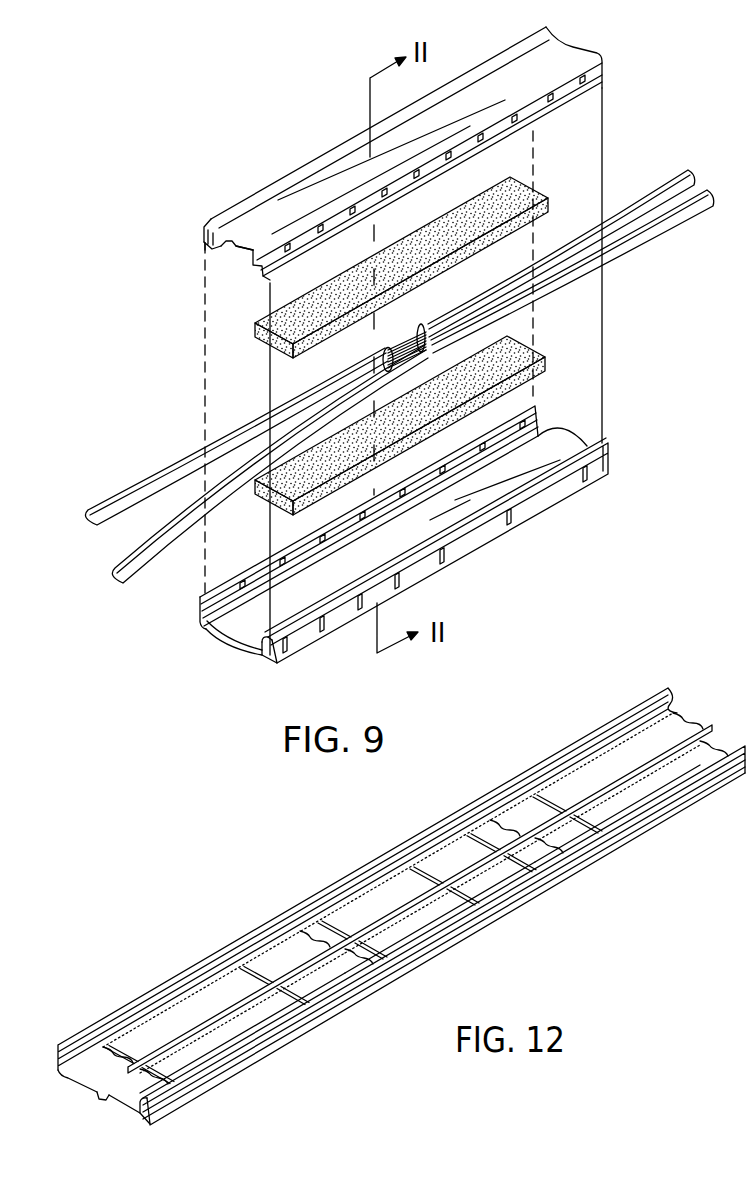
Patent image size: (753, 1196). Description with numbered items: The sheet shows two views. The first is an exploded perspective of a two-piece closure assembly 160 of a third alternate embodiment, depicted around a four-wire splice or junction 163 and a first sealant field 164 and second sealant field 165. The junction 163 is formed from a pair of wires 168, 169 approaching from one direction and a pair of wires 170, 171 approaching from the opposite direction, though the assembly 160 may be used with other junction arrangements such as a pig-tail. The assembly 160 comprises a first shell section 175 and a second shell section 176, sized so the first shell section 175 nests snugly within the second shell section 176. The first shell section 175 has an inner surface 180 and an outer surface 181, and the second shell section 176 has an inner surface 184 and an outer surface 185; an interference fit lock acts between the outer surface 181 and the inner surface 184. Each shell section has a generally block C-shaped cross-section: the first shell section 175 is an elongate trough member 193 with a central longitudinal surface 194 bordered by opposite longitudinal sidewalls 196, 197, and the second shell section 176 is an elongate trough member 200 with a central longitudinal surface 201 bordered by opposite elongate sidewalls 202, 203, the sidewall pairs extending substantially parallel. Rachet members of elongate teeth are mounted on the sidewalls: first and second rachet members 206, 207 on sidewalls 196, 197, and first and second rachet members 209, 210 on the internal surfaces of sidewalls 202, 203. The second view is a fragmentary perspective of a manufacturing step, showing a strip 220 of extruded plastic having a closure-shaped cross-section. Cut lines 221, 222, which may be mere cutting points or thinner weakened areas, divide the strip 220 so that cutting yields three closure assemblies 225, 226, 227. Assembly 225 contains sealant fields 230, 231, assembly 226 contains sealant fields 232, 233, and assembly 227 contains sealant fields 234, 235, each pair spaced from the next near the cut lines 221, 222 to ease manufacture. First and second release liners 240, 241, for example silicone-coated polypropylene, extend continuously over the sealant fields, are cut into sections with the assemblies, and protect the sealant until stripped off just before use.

In FIG. 9, the assembly 160 is at (624, 86).
In FIG. 9, the four-wire splice or junction 163 is at (397, 337).
In FIG. 9, the first sealant field 164 is at (513, 190).
In FIG. 9, the second sealant field 165 is at (517, 360).
In FIG. 9, the wire 168 is at (637, 195).
In FIG. 9, the wire 169 is at (686, 203).
In FIG. 9, the wire 170 is at (120, 493).
In FIG. 9, the wire 171 is at (152, 548).
In FIG. 9, the first shell section 175 is at (380, 161).
In FIG. 9, the second shell section 176 is at (383, 551).
In FIG. 9, the inner surface 180 is at (243, 255).
In FIG. 9, the outer surface 181 is at (562, 53).
In FIG. 9, the inner surface 184 is at (538, 452).
In FIG. 9, the outer surface 185 is at (560, 485).
In FIG. 9, the elongate trough member 193 is at (228, 242).
In FIG. 9, the central longitudinal surface 194 is at (252, 256).
In FIG. 9, the first longitudinal sidewall 196 is at (204, 241).
In FIG. 9, the second longitudinal sidewall 197 is at (295, 252).
In FIG. 9, the elongate trough member 200 is at (218, 631).
In FIG. 9, the central longitudinal surface 201 is at (246, 622).
In FIG. 9, the elongate sidewall 202 is at (202, 608).
In FIG. 9, the elongate sidewall 203 is at (314, 632).
In FIG. 9, the first rachet member 206 is at (206, 230).
In FIG. 9, the second rachet member 207 is at (462, 148).
In FIG. 9, the first rachet member 209 is at (388, 497).
In FIG. 9, the second rachet member 210 is at (262, 660).
In FIG. 12, the strip 220 is at (687, 803).
In FIG. 12, the cut line 221 is at (282, 922).
In FIG. 12, the cut line 222 is at (497, 820).
In FIG. 12, the closure assembly 225 is at (318, 1004).
In FIG. 12, the closure assembly 226 is at (507, 910).
In FIG. 12, the closure assembly 227 is at (598, 858).
In FIG. 12, the sealant field 230 is at (147, 1028).
In FIG. 12, the sealant field 231 is at (213, 1038).
In FIG. 12, the sealant field 232 is at (390, 883).
In FIG. 12, the sealant field 233 is at (430, 908).
In FIG. 12, the sealant field 234 is at (615, 753).
In FIG. 12, the sealant field 235 is at (613, 803).
In FIG. 12, the first release liner 240 is at (88, 1080).
In FIG. 12, the second release liner 241 is at (123, 1105).